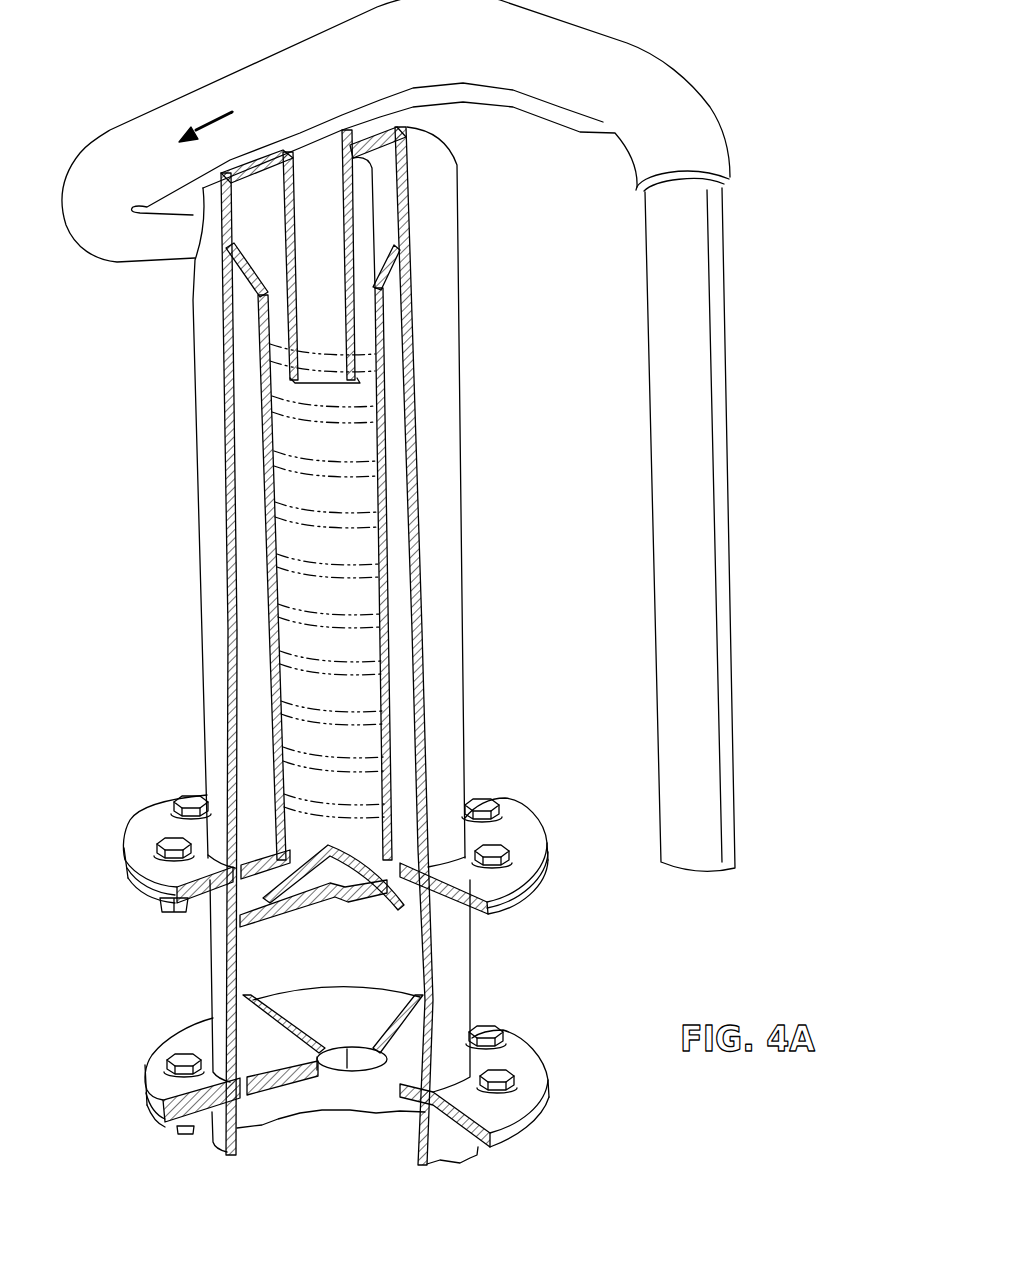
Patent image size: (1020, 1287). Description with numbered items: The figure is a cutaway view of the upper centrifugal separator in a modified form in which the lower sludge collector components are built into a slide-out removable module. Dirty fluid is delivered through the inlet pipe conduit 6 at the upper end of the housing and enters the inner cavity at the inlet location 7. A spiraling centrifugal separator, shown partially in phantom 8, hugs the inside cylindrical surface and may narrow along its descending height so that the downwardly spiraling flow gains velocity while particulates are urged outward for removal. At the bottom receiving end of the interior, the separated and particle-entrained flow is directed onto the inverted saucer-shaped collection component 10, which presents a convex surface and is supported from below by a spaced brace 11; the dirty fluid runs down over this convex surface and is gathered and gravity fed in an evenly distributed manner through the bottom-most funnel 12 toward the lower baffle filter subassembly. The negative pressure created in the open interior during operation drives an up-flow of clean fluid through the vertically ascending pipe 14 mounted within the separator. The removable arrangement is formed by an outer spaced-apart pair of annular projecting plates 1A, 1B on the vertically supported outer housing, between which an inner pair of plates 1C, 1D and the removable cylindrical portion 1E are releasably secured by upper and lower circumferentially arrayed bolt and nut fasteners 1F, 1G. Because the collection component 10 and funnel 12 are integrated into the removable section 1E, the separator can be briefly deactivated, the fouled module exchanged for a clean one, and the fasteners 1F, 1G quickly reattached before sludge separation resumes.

The inlet pipe conduit 6 is at (306, 100).
The inlet location 7 is at (266, 244).
The spiraling centrifugal separator 8 is at (360, 520).
The collection component 10 is at (367, 843).
The brace 11 is at (360, 897).
The funnel 12 is at (313, 1003).
The vertically ascending pipe 14 is at (368, 227).
The outer annular projecting plate 1A is at (533, 845).
The outer annular projecting plate 1B is at (517, 1123).
The inner plate 1C is at (523, 893).
The inner plate 1D is at (530, 1068).
The removable cylindrical portion 1E is at (450, 963).
The upper bolt and nut fasteners 1F is at (172, 838).
The lower bolt and nut fasteners 1G is at (187, 1053).